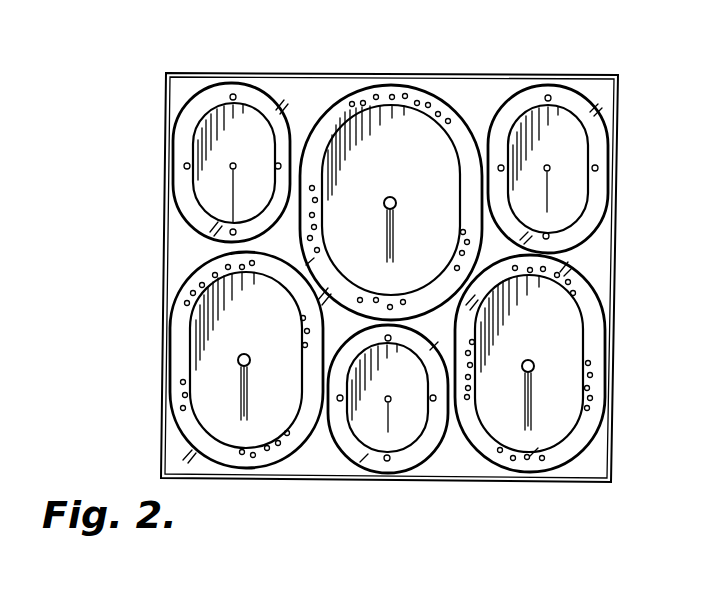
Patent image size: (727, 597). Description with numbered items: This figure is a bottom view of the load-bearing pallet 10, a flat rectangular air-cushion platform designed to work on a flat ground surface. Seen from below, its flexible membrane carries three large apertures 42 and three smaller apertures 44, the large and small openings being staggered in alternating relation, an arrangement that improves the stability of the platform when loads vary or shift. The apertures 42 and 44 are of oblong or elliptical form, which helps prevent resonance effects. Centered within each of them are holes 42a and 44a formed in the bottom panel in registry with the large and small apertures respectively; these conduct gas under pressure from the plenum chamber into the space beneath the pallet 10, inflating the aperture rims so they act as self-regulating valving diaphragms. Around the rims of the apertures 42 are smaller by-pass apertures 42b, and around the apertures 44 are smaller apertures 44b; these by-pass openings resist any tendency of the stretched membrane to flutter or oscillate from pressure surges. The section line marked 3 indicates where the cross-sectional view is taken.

The load-bearing pallet 10 is at (628, 220).
The large apertures 42 is at (443, 219).
The holes 42a is at (393, 197).
The smaller apertures 42b is at (406, 94).
The smaller apertures 44 is at (268, 195).
The holes 44a is at (246, 146).
The smaller apertures 44b is at (280, 162).
The section line 3- 3 is at (120, 380).